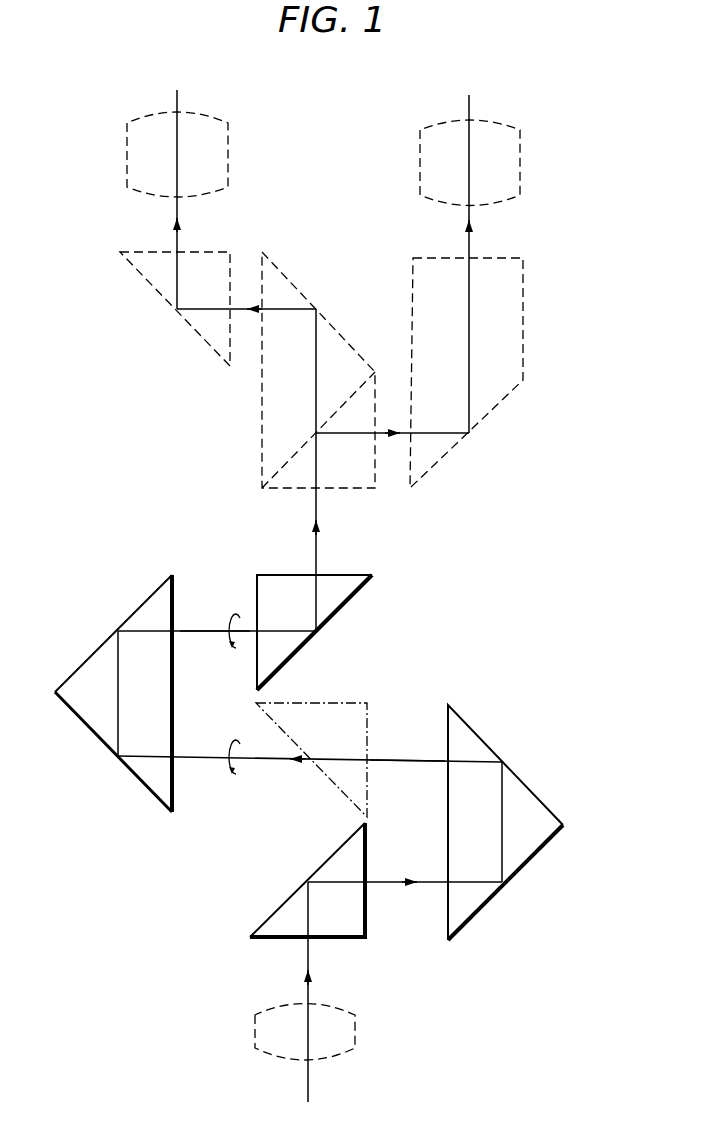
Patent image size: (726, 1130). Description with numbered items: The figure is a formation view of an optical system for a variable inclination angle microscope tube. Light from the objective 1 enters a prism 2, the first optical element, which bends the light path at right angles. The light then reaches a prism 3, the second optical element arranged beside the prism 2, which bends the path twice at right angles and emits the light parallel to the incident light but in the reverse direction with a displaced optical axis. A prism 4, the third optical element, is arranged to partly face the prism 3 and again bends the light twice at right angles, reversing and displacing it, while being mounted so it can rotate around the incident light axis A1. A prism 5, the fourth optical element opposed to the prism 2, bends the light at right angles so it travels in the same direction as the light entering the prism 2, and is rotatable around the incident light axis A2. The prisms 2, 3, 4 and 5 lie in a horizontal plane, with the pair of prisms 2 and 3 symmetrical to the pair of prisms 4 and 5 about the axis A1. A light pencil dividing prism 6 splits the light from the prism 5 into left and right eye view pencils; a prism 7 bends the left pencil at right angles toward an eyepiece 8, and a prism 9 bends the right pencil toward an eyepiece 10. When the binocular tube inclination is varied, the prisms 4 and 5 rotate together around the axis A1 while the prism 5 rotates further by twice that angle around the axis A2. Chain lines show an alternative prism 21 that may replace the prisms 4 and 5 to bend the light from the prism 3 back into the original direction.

The objective 1 is at (254, 1030).
The prism (first optical element) 2 is at (290, 897).
The prism (second optical element) 3 is at (530, 792).
The prism (third optical element) 4 is at (78, 671).
The prism (fourth optical element) 5 is at (343, 612).
The light pencil dividing prism 6 is at (260, 431).
The prism 7 is at (525, 345).
The eyepiece 8 is at (522, 168).
The prism 9 is at (139, 273).
The eyepiece 10 is at (126, 156).
The prism 21 is at (361, 704).
The incident light axis A1 is at (403, 763).
The incident light axis A2 is at (196, 632).